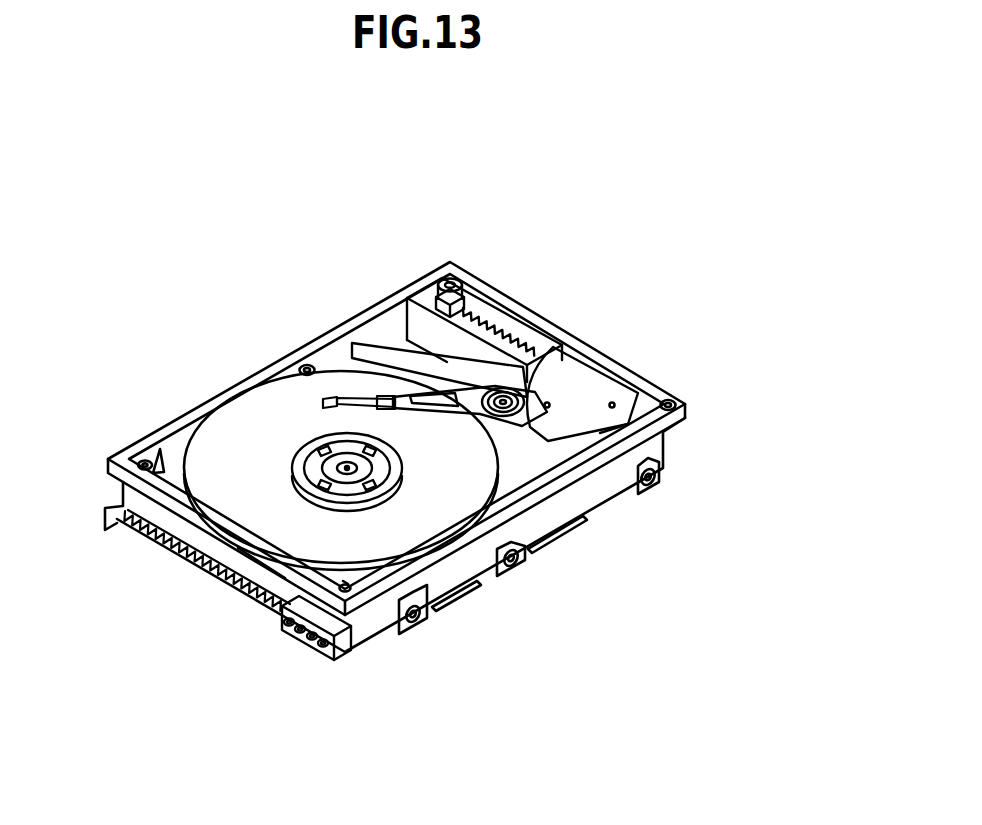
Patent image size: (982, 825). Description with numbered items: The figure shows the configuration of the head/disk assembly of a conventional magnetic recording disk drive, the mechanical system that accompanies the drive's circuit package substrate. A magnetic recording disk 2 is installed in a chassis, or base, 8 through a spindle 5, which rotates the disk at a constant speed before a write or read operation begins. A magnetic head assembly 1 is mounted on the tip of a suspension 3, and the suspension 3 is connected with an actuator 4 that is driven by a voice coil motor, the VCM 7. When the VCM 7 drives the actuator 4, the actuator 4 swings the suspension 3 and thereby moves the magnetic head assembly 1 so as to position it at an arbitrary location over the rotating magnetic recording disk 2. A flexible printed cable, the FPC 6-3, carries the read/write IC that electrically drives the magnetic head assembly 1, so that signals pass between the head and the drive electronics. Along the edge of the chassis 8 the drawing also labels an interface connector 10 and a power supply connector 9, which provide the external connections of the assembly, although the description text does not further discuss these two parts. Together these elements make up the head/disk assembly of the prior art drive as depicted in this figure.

The magnetic head assembly 1 is at (333, 401).
The magnetic recording disk 2 is at (452, 512).
The suspension 3 is at (358, 398).
The actuator 4 is at (532, 397).
The spindle 5 is at (313, 460).
The flexible printed cable 6-3 is at (467, 350).
The voice coil motor 7 is at (580, 410).
The chassis (base) 8 is at (435, 587).
The power supply connector 9 is at (293, 627).
The interface connector 10 is at (210, 583).